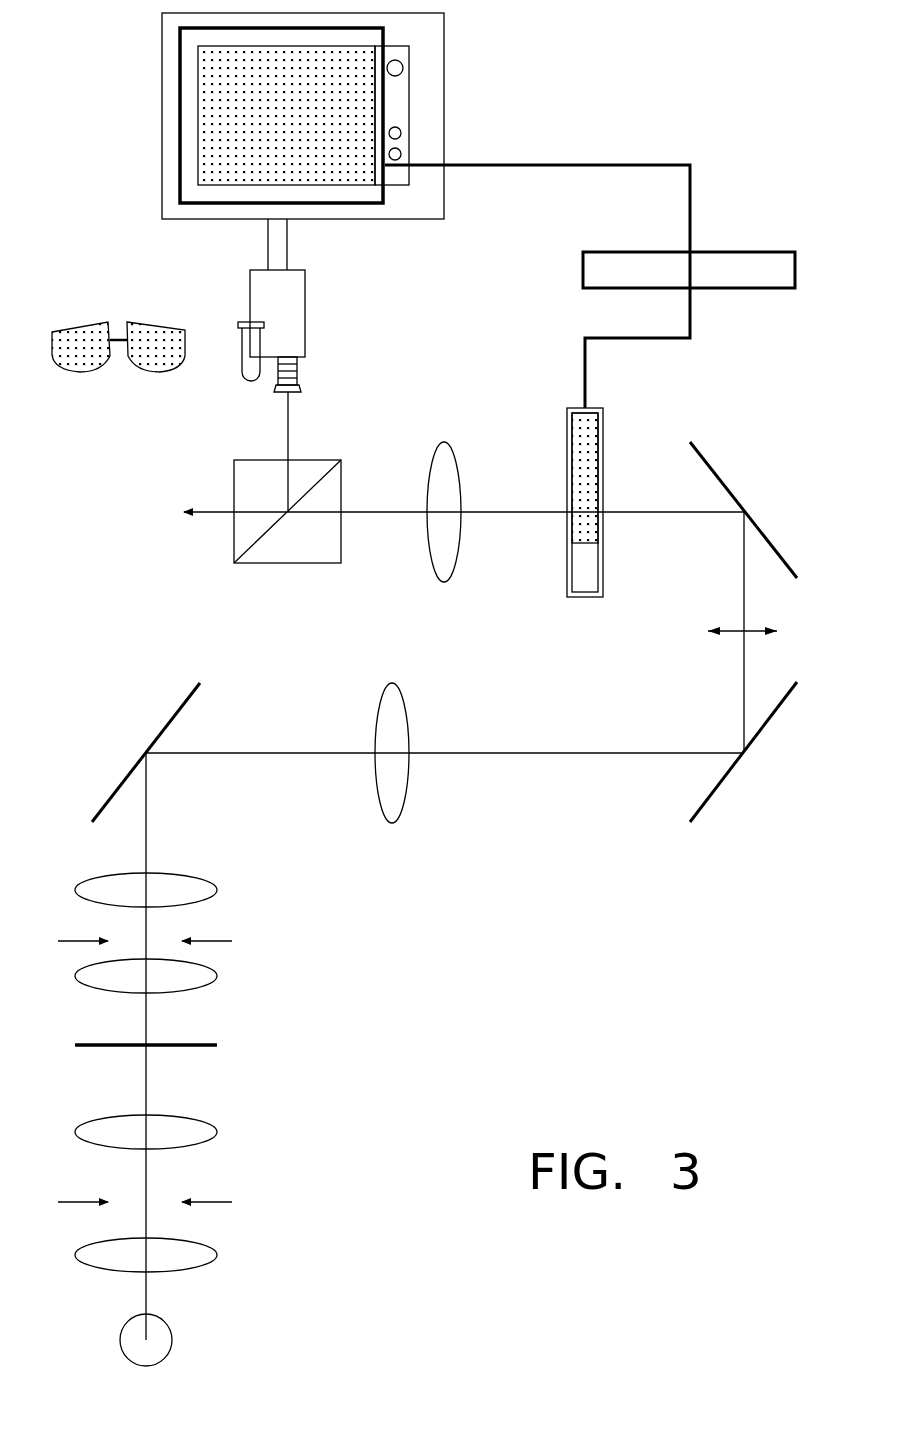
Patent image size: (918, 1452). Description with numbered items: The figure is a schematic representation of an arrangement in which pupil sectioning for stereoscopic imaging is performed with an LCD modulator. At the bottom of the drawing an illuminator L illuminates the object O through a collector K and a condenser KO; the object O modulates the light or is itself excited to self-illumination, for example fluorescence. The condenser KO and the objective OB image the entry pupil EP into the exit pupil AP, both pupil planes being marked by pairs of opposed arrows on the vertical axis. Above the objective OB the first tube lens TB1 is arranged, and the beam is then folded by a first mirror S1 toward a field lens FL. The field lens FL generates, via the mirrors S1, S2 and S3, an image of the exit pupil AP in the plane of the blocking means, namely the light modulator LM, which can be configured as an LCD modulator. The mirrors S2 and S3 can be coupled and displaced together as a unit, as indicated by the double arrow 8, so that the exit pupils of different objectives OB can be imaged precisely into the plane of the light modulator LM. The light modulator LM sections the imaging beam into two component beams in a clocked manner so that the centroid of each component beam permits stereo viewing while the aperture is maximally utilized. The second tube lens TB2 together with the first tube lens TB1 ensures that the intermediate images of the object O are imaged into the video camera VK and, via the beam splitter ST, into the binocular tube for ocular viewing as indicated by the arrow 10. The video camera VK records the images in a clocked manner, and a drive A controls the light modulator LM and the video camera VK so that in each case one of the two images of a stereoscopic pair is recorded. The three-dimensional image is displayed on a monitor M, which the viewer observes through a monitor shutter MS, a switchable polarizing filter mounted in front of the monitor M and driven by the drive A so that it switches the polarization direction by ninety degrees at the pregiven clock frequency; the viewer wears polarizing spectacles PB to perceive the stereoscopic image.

The monitor shutter MS is at (162, 94).
The monitor M is at (200, 147).
The drive A is at (750, 252).
The video camera VK is at (294, 331).
The polarizing spectacles PB is at (118, 366).
The arrow 10 is at (213, 508).
The beam splitter ST is at (287, 531).
The tube lens TB2 is at (445, 495).
The light modulator LM is at (597, 430).
The mirror S3 is at (735, 493).
The double arrow 8 is at (735, 631).
The mirror S2 is at (770, 728).
The mirror S1 is at (165, 726).
The field lens FL is at (392, 772).
The tube lens TB1 is at (217, 890).
The exit pupil AP is at (164, 943).
The objective OB is at (217, 976).
The object O is at (222, 1048).
The condenser KO is at (217, 1132).
The entry pupil EP is at (161, 1204).
The collector K is at (217, 1255).
The illuminator L is at (172, 1340).